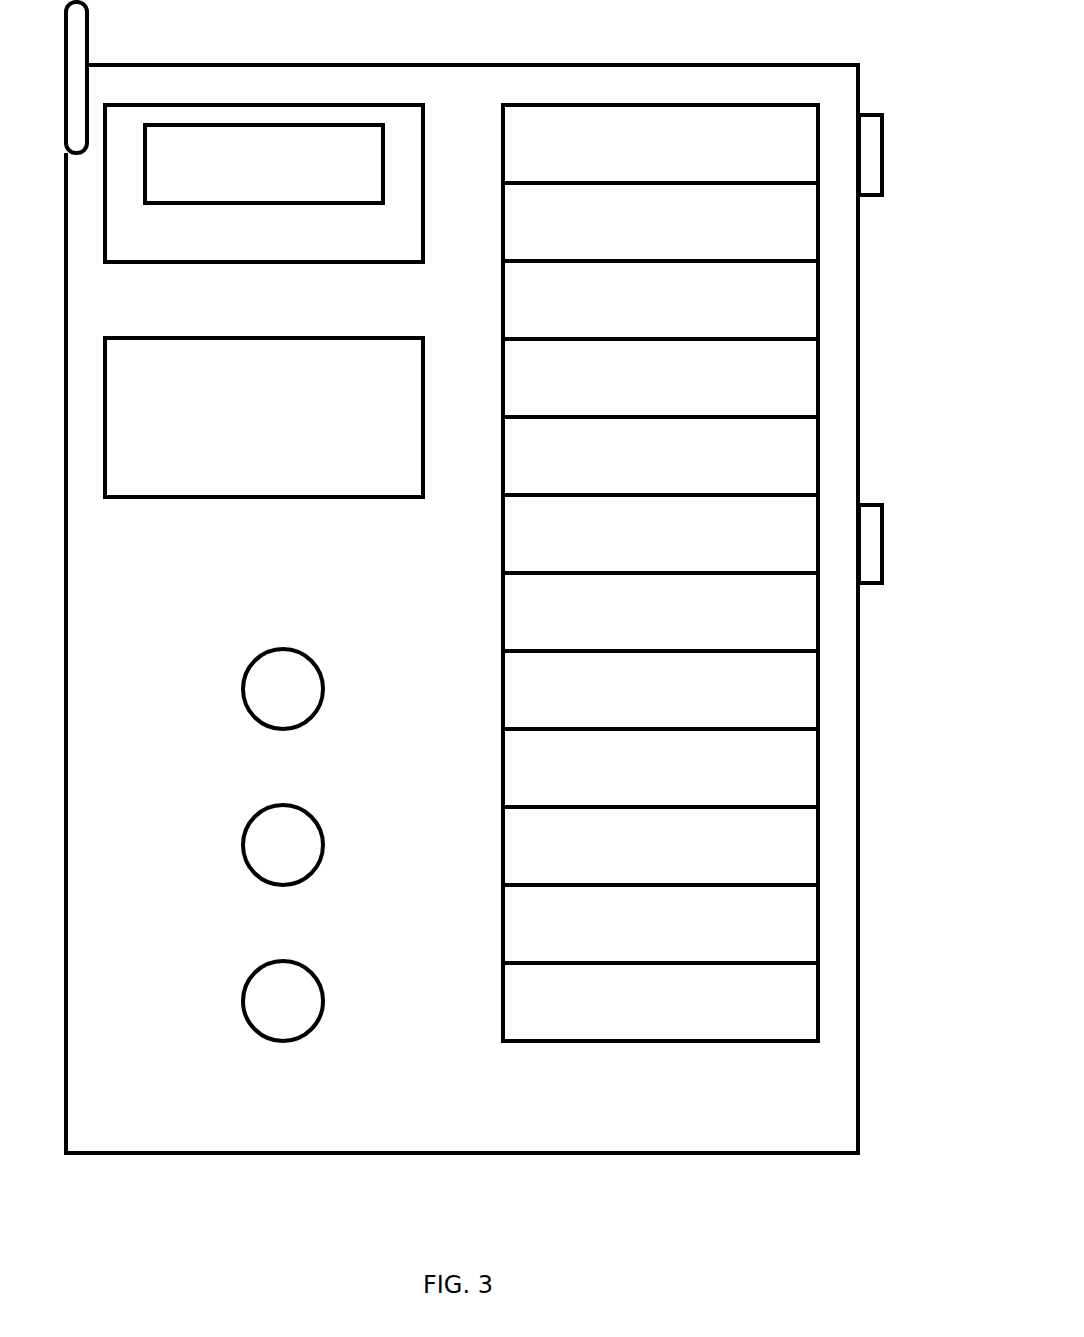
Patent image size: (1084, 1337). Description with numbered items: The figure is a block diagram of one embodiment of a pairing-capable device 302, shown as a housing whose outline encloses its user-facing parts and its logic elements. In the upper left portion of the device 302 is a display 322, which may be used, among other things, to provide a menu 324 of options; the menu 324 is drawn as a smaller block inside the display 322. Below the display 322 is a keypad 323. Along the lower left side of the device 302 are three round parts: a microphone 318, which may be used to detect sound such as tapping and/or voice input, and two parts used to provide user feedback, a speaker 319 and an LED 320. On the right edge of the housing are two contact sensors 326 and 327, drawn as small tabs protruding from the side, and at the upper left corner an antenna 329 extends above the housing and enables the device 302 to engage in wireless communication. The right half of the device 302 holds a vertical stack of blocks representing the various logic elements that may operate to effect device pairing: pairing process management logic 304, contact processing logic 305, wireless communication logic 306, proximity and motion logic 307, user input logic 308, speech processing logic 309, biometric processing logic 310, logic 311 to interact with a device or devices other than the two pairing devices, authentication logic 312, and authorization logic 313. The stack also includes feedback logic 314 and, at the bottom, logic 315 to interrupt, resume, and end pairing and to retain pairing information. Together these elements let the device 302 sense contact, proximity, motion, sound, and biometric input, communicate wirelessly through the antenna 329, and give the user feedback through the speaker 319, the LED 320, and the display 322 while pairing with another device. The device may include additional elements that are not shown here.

The device 302 is at (478, 1157).
The pairing process management logic 304 is at (638, 156).
The contact processing logic 305 is at (638, 234).
The wireless communication logic 306 is at (638, 312).
The proximity and motion logic 307 is at (638, 390).
The user input logic 308 is at (638, 468).
The speech processing logic 309 is at (638, 546).
The biometric processing logic 310 is at (638, 624).
The logic to interact with a device or devices other than the two pairing devices 311 is at (638, 702).
The authentication logic 312 is at (638, 780).
The authorization logic 313 is at (638, 858).
The feedback logic 314 is at (638, 936).
The logic to interrupt, resume, and end pairing and to retain pairing information 315 is at (638, 1014).
The microphone 318 is at (244, 700).
The speaker 319 is at (244, 856).
The LED 320 is at (244, 1012).
The display 322 is at (370, 247).
The keypad 323 is at (241, 429).
The menu 324 is at (241, 176).
The contact sensor 326 is at (883, 150).
The contact sensor 327 is at (883, 538).
The antenna 329 is at (87, 30).